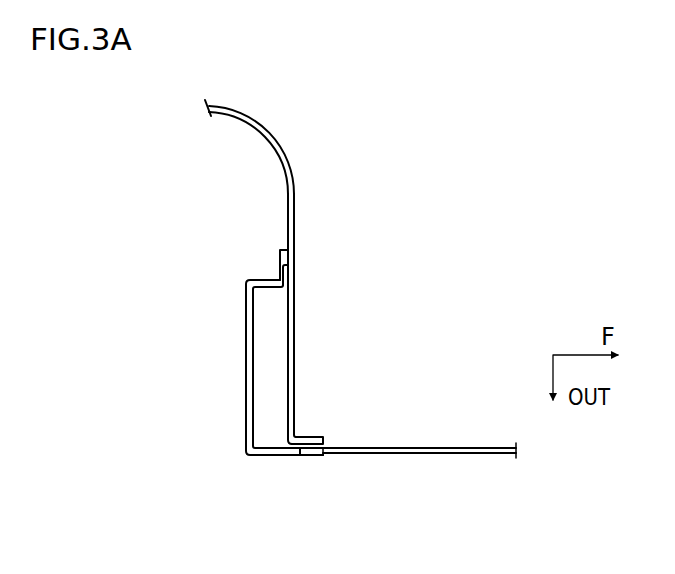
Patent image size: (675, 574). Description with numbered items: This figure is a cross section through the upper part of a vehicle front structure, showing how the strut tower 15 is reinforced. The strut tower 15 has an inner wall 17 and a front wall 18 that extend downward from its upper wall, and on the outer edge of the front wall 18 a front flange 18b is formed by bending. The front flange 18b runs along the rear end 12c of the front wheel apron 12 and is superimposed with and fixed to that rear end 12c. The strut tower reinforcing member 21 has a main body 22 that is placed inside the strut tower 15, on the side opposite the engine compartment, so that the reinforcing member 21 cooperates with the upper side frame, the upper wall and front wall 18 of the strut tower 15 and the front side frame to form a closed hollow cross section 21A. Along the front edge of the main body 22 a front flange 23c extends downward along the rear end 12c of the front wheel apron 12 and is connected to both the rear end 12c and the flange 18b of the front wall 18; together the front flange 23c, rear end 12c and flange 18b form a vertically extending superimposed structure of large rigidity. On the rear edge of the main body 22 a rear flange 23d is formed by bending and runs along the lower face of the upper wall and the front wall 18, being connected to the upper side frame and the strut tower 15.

The front wheel apron 12 is at (395, 459).
The rear end of the front wheel apron 12c is at (302, 455).
The strut tower 15 is at (264, 118).
The inner wall 17 is at (213, 101).
The front wall 18 is at (337, 305).
The front flange 18b is at (310, 437).
The strut tower reinforcing member 21 is at (211, 333).
The closed hollow cross section 21A is at (272, 410).
The main body 22 is at (246, 386).
The front flange 23c is at (312, 457).
The rear flange 23d is at (281, 263).